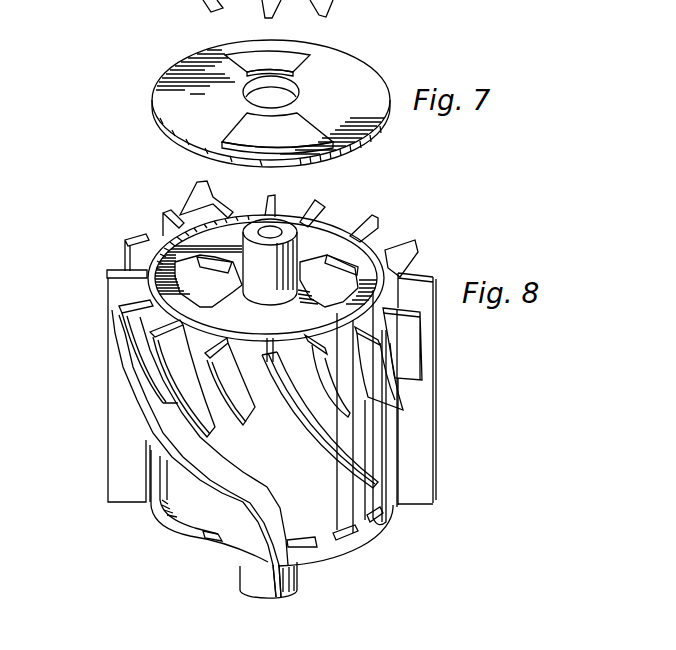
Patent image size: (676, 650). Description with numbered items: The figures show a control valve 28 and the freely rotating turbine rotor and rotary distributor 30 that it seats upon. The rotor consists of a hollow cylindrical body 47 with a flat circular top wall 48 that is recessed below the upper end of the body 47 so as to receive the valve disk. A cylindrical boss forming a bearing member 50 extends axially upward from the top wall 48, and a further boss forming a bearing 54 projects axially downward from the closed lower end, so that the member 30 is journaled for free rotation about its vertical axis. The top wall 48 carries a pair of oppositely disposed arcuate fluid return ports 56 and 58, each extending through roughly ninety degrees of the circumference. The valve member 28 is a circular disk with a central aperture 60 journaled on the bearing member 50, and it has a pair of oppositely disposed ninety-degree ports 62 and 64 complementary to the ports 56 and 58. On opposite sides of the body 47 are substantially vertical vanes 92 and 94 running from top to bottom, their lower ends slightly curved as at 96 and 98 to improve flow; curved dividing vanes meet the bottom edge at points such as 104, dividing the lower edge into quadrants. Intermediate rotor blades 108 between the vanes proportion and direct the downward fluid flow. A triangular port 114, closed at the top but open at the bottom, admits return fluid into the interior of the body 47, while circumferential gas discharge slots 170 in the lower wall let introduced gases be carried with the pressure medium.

In FIG. 7, the control valve 28 is at (367, 80).
In FIG. 7, the central aperture 60 is at (243, 88).
In FIG. 7, the port 62 is at (240, 55).
In FIG. 7, the port 64 is at (310, 128).
In FIG. 8, the turbine rotor and rotary distributor 30 is at (402, 222).
In FIG. 8, the cylindrical body 47 is at (330, 547).
In FIG. 8, the top wall 48 is at (260, 313).
In FIG. 8, the bearing member 50 is at (282, 232).
In FIG. 8, the bearing 54 is at (282, 587).
In FIG. 8, the fluid return port 56 is at (338, 260).
In FIG. 8, the fluid return port 58 is at (165, 243).
In FIG. 8, the vertical vane 92 is at (117, 383).
In FIG. 8, the vertical vane 94 is at (422, 403).
In FIG. 8, the curved lower end 96 is at (127, 492).
In FIG. 8, the curved lower end 98 is at (410, 507).
In FIG. 8, the intersection point 104 is at (268, 563).
In FIG. 8, the intermediate rotor blades 108 is at (268, 202).
In FIG. 8, the triangular port 114 is at (170, 507).
In FIG. 8, the gas discharge slots 170 is at (350, 532).